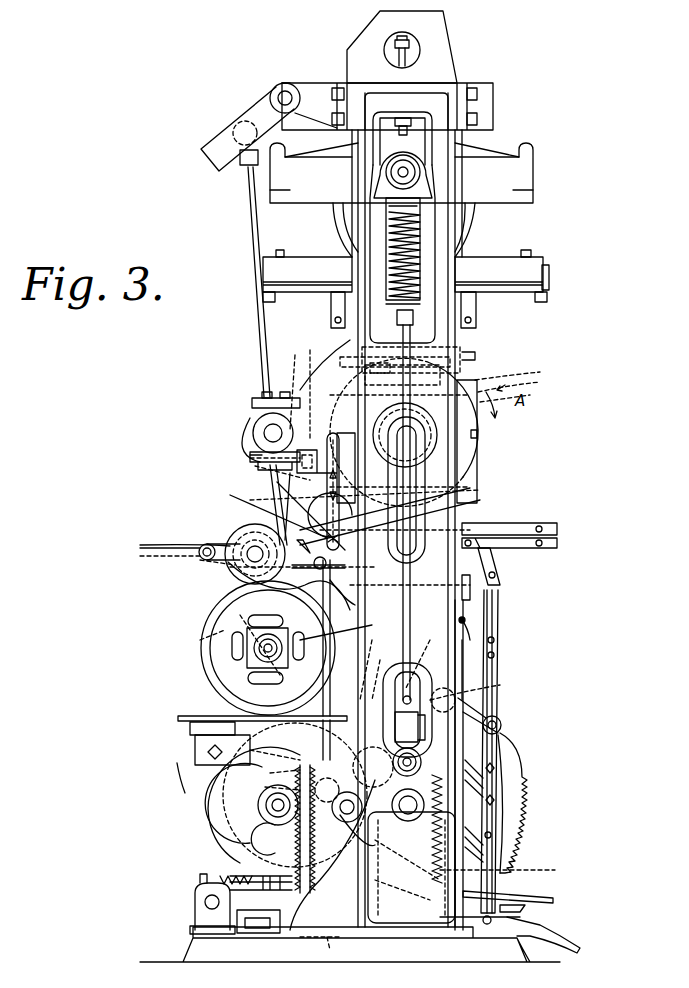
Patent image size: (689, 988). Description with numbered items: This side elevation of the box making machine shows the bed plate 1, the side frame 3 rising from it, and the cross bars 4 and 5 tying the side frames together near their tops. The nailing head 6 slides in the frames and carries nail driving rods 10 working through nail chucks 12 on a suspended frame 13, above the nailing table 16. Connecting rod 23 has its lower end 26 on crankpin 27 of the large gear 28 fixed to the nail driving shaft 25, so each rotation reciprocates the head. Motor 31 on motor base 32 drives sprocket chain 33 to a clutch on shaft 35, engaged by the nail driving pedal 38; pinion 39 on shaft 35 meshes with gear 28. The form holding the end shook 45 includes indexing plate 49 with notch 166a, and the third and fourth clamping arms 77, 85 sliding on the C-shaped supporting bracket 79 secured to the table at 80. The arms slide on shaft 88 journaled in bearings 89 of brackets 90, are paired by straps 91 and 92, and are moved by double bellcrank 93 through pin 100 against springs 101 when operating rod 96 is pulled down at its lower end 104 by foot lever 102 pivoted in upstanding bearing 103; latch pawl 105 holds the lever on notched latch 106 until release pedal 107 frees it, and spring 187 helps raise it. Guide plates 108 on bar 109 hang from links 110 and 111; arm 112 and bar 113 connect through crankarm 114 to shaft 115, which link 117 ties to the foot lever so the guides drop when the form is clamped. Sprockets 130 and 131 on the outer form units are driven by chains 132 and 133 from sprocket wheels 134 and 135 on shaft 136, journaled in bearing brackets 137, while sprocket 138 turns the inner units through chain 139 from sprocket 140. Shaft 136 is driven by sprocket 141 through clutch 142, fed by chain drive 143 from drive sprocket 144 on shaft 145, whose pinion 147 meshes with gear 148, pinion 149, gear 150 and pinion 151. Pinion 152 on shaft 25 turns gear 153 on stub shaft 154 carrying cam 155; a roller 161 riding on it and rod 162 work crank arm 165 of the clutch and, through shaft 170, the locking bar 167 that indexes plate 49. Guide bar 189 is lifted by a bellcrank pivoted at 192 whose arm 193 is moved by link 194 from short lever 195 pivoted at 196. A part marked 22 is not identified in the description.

The base or bed plate 1 is at (478, 968).
The vertical side frame 3 is at (445, 675).
The cross bar 4 is at (482, 100).
The cross bar 5 is at (330, 100).
The nailing head 6 is at (533, 178).
The nail driving rods 10 is at (462, 225).
The nail chucks 12 is at (548, 288).
The frame 13 is at (536, 258).
The nailing table 16 is at (463, 655).
The pivot pin 22 is at (470, 620).
The connecting rod 23 is at (412, 612).
The nail driving shaft 25 is at (440, 830).
The lower end of connecting rod 26 is at (420, 738).
The crankpin 27 is at (420, 760).
The large gear 28 is at (522, 837).
The motor 31 is at (215, 655).
The motor base 32 is at (190, 716).
The sprocket chain 33 is at (195, 738).
The shaft 35 is at (258, 800).
The nail driving pedal 38 is at (525, 912).
The pinion 39 is at (240, 825).
The left-hand end shook 45 is at (488, 500).
The plate 49 is at (482, 447).
The third clamping arm 77 is at (345, 435).
The supporting bracket 79 is at (292, 498).
The securing point 80 is at (472, 590).
The fourth clamping arm 85 is at (407, 416).
The shaft 88 is at (264, 433).
The bearings 89 is at (250, 418).
The brackets 90 is at (293, 362).
The strap 91 is at (262, 470).
The strap 92 is at (255, 396).
The double bellcrank 93 is at (296, 392).
The operating rod 96 is at (210, 650).
The pin 100 is at (290, 395).
The springs 101 is at (258, 418).
The foot lever 102 is at (555, 932).
The upstanding bearing 103 is at (192, 917).
The lower end of operating rod 104 is at (329, 948).
The latch pawl 105 is at (402, 884).
The notched latch 106 is at (378, 868).
The release pedal 107 is at (553, 900).
The guide plates 108 is at (530, 523).
The bar 109 is at (557, 546).
The link 110 is at (500, 555).
The link 111 is at (465, 517).
The forwardly projecting arm 112 is at (500, 570).
The bar 113 is at (500, 670).
The crankarm 114 is at (498, 718).
The shaft 115 is at (489, 691).
The link 117 is at (490, 820).
The sprocket 130 is at (522, 369).
The sprocket 131 is at (523, 381).
The chain 132 is at (250, 455).
The chain 133 is at (255, 460).
The sprocket wheel 134 is at (168, 533).
The sprocket wheel 135 is at (153, 541).
The shaft 136 is at (250, 560).
The bearing brackets 137 is at (215, 562).
The sprocket 138 is at (524, 391).
The chain 139 is at (248, 468).
The sprocket 140 is at (153, 552).
The sprocket 141 is at (170, 563).
The clutch 142 is at (235, 535).
The chain drive 143 is at (205, 630).
The drive sprocket 144 is at (380, 665).
The axial shaft 145 is at (392, 671).
The pinion 147 is at (430, 655).
The gear 148 is at (275, 753).
The pinion 149 is at (338, 800).
The gear 150 is at (270, 771).
The pinion 151 is at (268, 786).
The pinion 152 is at (436, 768).
The gear 153 is at (395, 845).
The stub shaft 154 is at (325, 832).
The cam 155 is at (250, 855).
The roller 161 is at (420, 670).
The rod 162 is at (375, 625).
The crank arm 165 is at (320, 520).
The notch 166a is at (478, 430).
The pin or bar 167 is at (480, 487).
The shaft 170 is at (412, 590).
The spring 187 is at (513, 868).
The guide bar 189 is at (475, 355).
The pivot 192 is at (470, 340).
The arm 193 is at (480, 367).
The link 194 is at (330, 500).
The short lever 195 is at (345, 562).
The pivot 196 is at (480, 470).